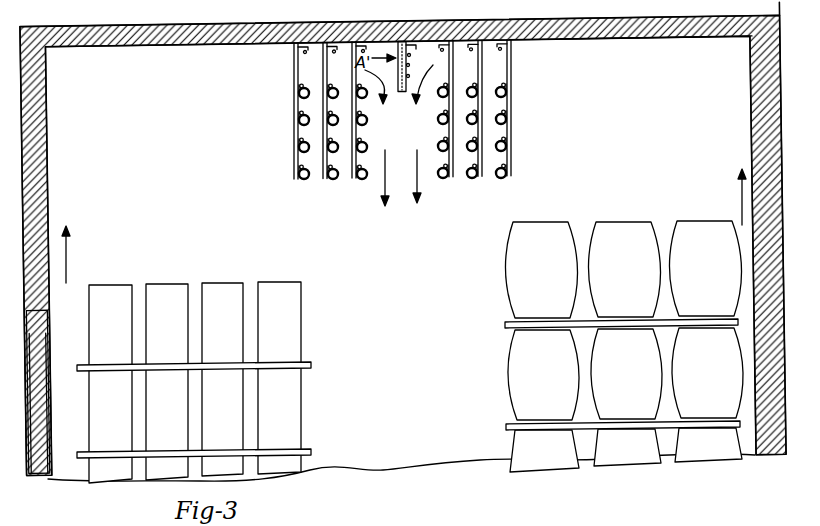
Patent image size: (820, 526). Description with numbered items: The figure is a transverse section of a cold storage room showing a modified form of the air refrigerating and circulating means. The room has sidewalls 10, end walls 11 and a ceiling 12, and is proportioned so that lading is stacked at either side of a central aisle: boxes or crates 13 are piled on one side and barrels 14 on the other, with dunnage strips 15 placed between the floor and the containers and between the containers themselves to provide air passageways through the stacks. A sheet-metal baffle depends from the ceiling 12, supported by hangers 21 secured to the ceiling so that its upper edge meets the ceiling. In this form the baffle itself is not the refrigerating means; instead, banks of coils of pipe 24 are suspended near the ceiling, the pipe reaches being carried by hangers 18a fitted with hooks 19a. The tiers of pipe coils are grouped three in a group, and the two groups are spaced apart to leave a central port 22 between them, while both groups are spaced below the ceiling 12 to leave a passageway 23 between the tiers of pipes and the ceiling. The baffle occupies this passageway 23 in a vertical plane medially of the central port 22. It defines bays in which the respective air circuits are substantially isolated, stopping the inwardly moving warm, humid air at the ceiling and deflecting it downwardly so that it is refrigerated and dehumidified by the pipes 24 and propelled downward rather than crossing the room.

The sidewalls 10 is at (46, 186).
The end walls 11 is at (447, 450).
The ceiling 12 is at (622, 37).
The boxes or crates 13 is at (167, 287).
The barrels 14 is at (558, 223).
The dunnage strips 15 is at (307, 363).
The hangers 18a is at (509, 95).
The hooks 19a is at (513, 148).
The hangers 21 is at (406, 78).
The central port 22 is at (400, 158).
The passageway 23 is at (440, 61).
The coils of pipe 24 is at (302, 91).